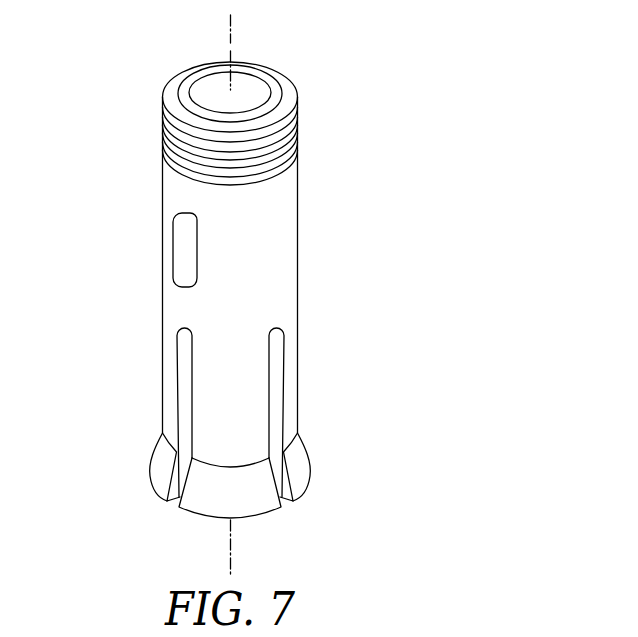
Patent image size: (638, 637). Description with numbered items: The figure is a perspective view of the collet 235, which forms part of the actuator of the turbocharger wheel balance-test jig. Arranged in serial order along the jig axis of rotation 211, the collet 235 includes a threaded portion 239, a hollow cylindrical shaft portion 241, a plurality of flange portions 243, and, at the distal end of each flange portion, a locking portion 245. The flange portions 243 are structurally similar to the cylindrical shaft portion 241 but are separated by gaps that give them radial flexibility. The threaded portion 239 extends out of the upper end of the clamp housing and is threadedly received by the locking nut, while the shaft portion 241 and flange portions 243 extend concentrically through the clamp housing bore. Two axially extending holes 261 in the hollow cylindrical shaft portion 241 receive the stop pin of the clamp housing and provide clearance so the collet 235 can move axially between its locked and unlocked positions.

The collet 235 is at (118, 61).
The jig axis of rotation 211 is at (231, 33).
The threaded portion 239 is at (295, 142).
The hollow cylindrical shaft portion 241 is at (288, 282).
The flange portions 243 is at (290, 375).
The locking portion 245 is at (303, 467).
The axially extending holes 261 is at (187, 215).